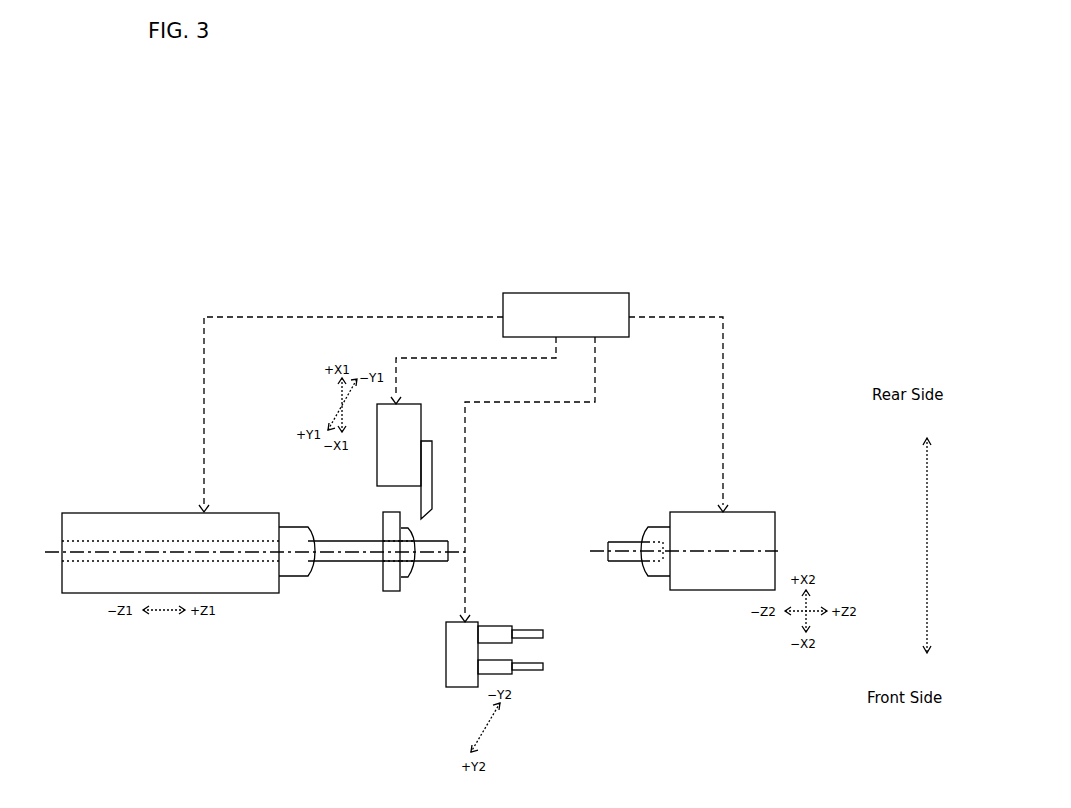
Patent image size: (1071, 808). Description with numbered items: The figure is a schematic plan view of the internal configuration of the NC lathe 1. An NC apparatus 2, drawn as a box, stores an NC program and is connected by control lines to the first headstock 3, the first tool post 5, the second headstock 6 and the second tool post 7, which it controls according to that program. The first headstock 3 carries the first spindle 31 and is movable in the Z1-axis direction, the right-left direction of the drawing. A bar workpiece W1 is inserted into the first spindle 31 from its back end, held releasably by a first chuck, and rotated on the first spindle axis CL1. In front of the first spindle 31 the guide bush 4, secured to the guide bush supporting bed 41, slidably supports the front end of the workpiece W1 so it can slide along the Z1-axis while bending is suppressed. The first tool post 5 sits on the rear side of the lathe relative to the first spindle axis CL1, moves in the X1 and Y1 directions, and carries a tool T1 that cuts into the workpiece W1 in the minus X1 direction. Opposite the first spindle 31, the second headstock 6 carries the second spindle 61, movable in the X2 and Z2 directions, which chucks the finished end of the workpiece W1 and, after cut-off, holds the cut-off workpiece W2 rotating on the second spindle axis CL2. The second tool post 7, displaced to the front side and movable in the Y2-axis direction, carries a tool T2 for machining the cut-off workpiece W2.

The NC lathe 1 is at (778, 357).
The NC apparatus 2 is at (569, 293).
The first headstock 3 is at (128, 513).
The first spindle 31 is at (292, 577).
The guide bush 4 is at (405, 578).
The guide bush supporting bed 41 is at (384, 583).
The first tool post 5 is at (377, 470).
The tool T1 is at (432, 460).
The bar workpiece W1 is at (428, 562).
The second headstock 6 is at (758, 512).
The second spindle 61 is at (658, 578).
The cut-off workpiece W2 is at (621, 563).
The second tool post 7 is at (446, 666).
The tool T2 is at (549, 663).
The first spindle axis CL1 is at (57, 550).
The second spindle axis CL2 is at (787, 549).